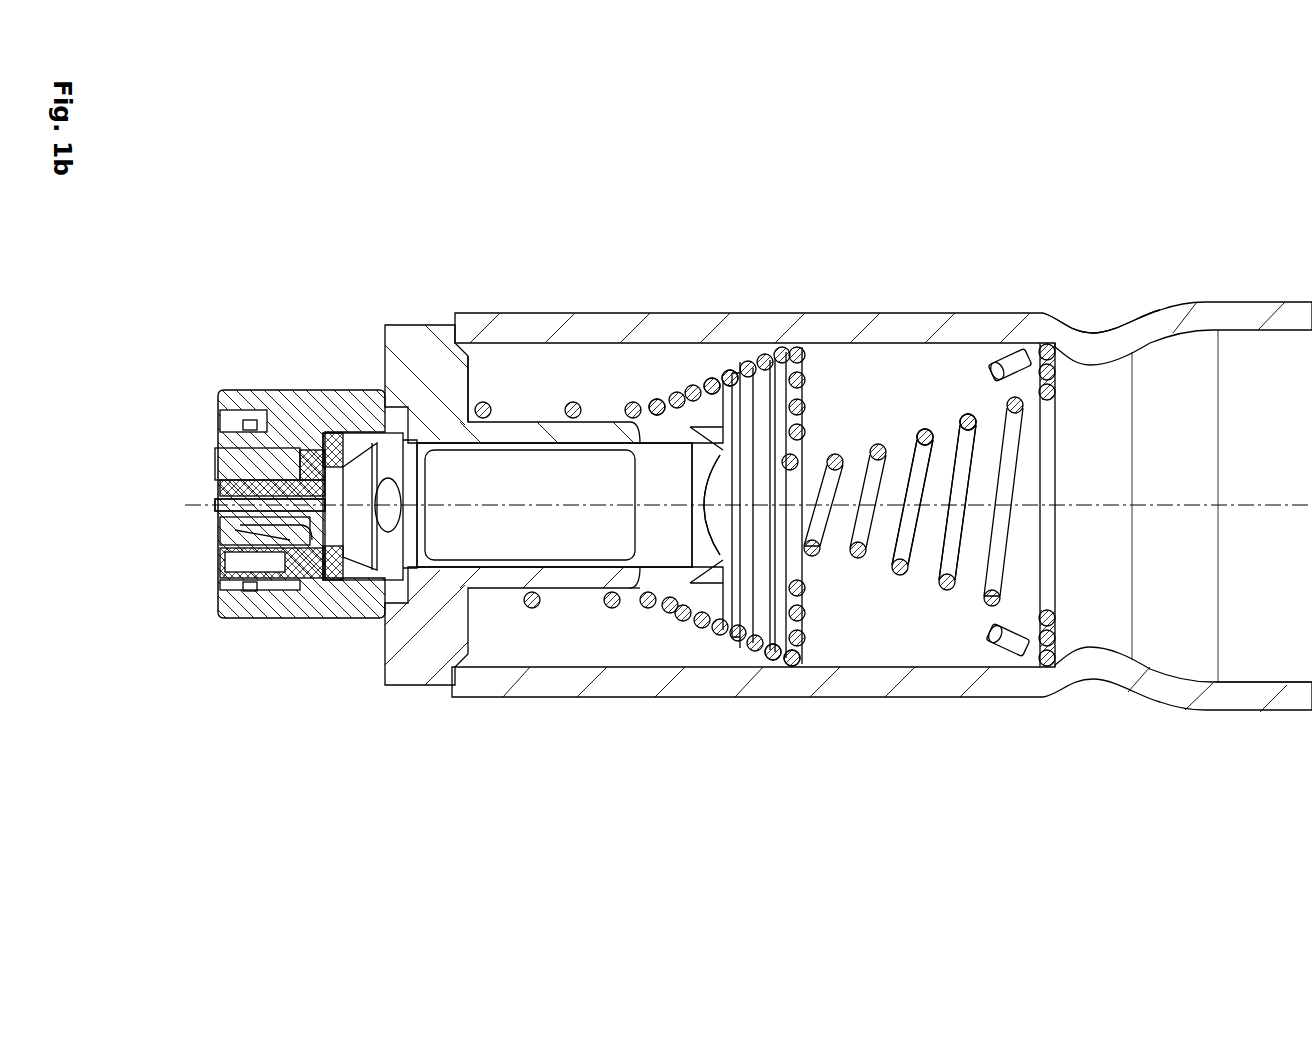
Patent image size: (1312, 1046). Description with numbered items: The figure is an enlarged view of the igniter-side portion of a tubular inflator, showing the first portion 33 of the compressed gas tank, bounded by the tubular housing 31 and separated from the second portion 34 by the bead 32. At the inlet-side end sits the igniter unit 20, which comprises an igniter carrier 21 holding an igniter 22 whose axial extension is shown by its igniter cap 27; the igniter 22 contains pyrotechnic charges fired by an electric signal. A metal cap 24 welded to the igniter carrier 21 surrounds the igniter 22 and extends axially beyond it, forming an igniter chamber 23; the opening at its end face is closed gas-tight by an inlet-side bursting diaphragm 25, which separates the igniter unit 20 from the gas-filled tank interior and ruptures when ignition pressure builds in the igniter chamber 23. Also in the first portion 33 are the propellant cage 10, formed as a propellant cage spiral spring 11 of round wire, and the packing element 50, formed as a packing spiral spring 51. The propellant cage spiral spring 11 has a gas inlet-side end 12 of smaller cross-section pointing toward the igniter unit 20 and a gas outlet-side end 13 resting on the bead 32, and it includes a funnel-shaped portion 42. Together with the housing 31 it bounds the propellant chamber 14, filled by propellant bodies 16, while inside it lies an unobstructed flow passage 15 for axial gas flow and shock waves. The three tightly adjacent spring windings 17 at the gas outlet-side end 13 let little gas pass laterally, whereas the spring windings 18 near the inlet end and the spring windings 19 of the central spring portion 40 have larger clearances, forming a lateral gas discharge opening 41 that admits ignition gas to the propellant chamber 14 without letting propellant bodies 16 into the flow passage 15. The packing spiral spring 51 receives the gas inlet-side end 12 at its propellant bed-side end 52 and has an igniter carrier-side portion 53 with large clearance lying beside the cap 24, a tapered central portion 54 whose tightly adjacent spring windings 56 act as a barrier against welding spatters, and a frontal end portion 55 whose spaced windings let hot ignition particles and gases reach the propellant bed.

The propellant cage 10 is at (960, 405).
The propellant cage spiral spring 11 is at (968, 422).
The gas inlet-side end 12 is at (825, 420).
The gas outlet-side end 13 is at (1055, 390).
The propellant chamber 14 is at (880, 365).
The flow passage 15 is at (838, 507).
The propellant bodies 16 is at (1005, 360).
The spring windings 17 is at (1054, 599).
The spring windings 18 is at (798, 462).
The spring windings 19 is at (966, 415).
The igniter unit 20 is at (237, 665).
The igniter carrier 21 is at (287, 390).
The igniter 22 is at (467, 533).
The igniter chamber 23 is at (658, 533).
The cap 24 is at (515, 420).
The inlet-side bursting diaphragm 25 is at (707, 530).
The igniter cap 27 is at (270, 505).
The housing 31 is at (483, 682).
The bead 32 is at (1073, 357).
The first portion 33 is at (482, 350).
The second portion 34 is at (1217, 657).
The central spring portion 40 is at (884, 578).
The lateral gas discharge opening 41 is at (921, 573).
The funnel-shaped portion 42 is at (925, 437).
The packing element 50 is at (688, 362).
The packing spiral spring 51 is at (657, 407).
The propellant bed-side end 52 is at (797, 353).
The igniter carrier-side portion 53 is at (553, 632).
The central portion 54 is at (693, 640).
The frontal end portion 55 is at (792, 690).
The spring windings 56 is at (732, 370).